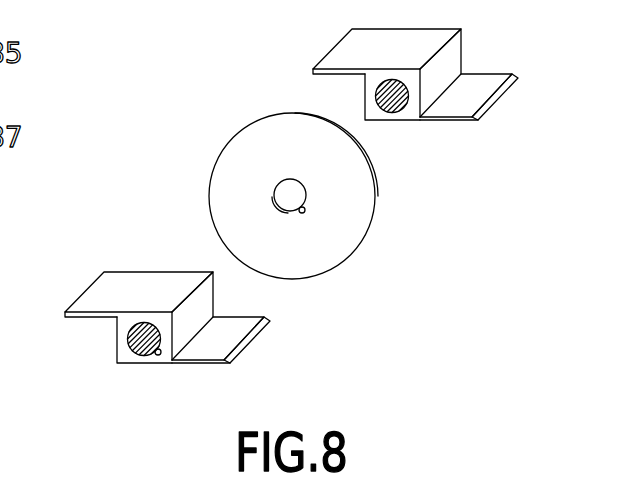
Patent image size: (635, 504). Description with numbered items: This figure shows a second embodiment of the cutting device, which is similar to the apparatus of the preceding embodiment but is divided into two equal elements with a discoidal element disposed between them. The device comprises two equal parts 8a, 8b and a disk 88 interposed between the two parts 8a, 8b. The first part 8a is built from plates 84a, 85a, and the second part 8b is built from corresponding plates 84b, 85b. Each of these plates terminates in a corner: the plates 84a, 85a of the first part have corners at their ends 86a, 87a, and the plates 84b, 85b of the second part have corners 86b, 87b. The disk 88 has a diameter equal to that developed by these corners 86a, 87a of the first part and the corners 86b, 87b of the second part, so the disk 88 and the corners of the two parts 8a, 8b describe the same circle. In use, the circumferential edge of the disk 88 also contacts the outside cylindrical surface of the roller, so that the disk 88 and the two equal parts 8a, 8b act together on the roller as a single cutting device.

The first part of the cutting device 8a is at (170, 294).
The second part of the cutting device 8b is at (404, 110).
The plate of the first part 84a is at (87, 325).
The plate of the second part 84b is at (342, 79).
The plate of the first part 85a is at (236, 329).
The plate of the second part 85b is at (481, 85).
The end corner of plate of the first part 86a is at (80, 284).
The end corner of plate of the second part 86b is at (327, 47).
The end corner of plate of the first part 87a is at (256, 354).
The end corner of plate of the second part 87b is at (503, 109).
The disk 88 is at (237, 155).